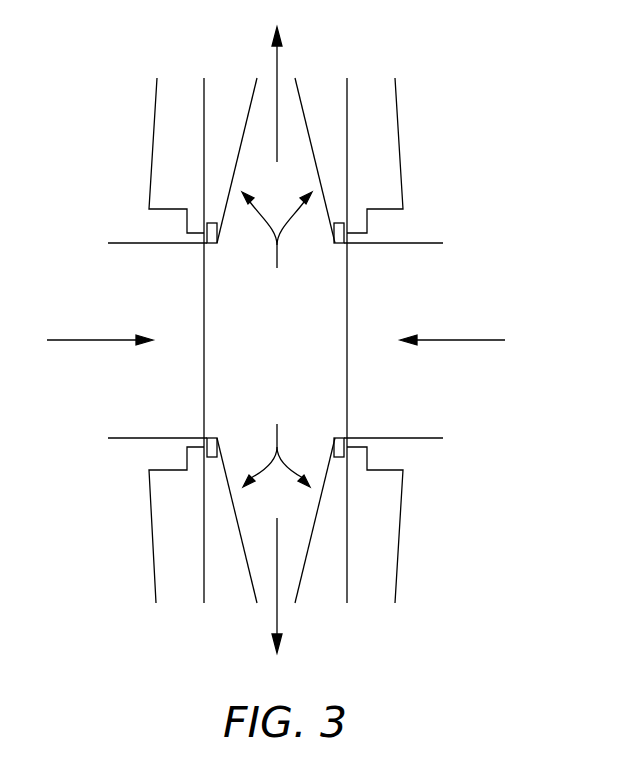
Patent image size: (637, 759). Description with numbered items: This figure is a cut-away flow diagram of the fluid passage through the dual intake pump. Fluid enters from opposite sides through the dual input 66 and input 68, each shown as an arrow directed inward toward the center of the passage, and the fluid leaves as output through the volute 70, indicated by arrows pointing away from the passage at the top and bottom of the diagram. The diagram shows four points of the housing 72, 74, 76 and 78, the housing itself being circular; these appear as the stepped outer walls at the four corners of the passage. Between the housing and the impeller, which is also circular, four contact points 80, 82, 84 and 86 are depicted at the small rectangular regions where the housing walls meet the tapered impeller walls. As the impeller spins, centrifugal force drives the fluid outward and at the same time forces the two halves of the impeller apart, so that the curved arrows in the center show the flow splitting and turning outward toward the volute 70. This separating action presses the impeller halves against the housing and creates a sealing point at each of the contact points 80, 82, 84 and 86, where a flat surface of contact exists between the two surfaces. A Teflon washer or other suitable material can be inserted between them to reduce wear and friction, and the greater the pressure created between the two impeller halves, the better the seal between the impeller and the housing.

The dual input 66 is at (100, 340).
The dual input 68 is at (452, 340).
The volute 70 is at (308, 338).
The housing point 72 is at (173, 163).
The housing point 74 is at (378, 163).
The housing point 76 is at (173, 517).
The housing point 78 is at (378, 517).
The contact point 80 is at (207, 243).
The contact point 82 is at (344, 243).
The contact point 84 is at (207, 438).
The contact point 86 is at (344, 438).